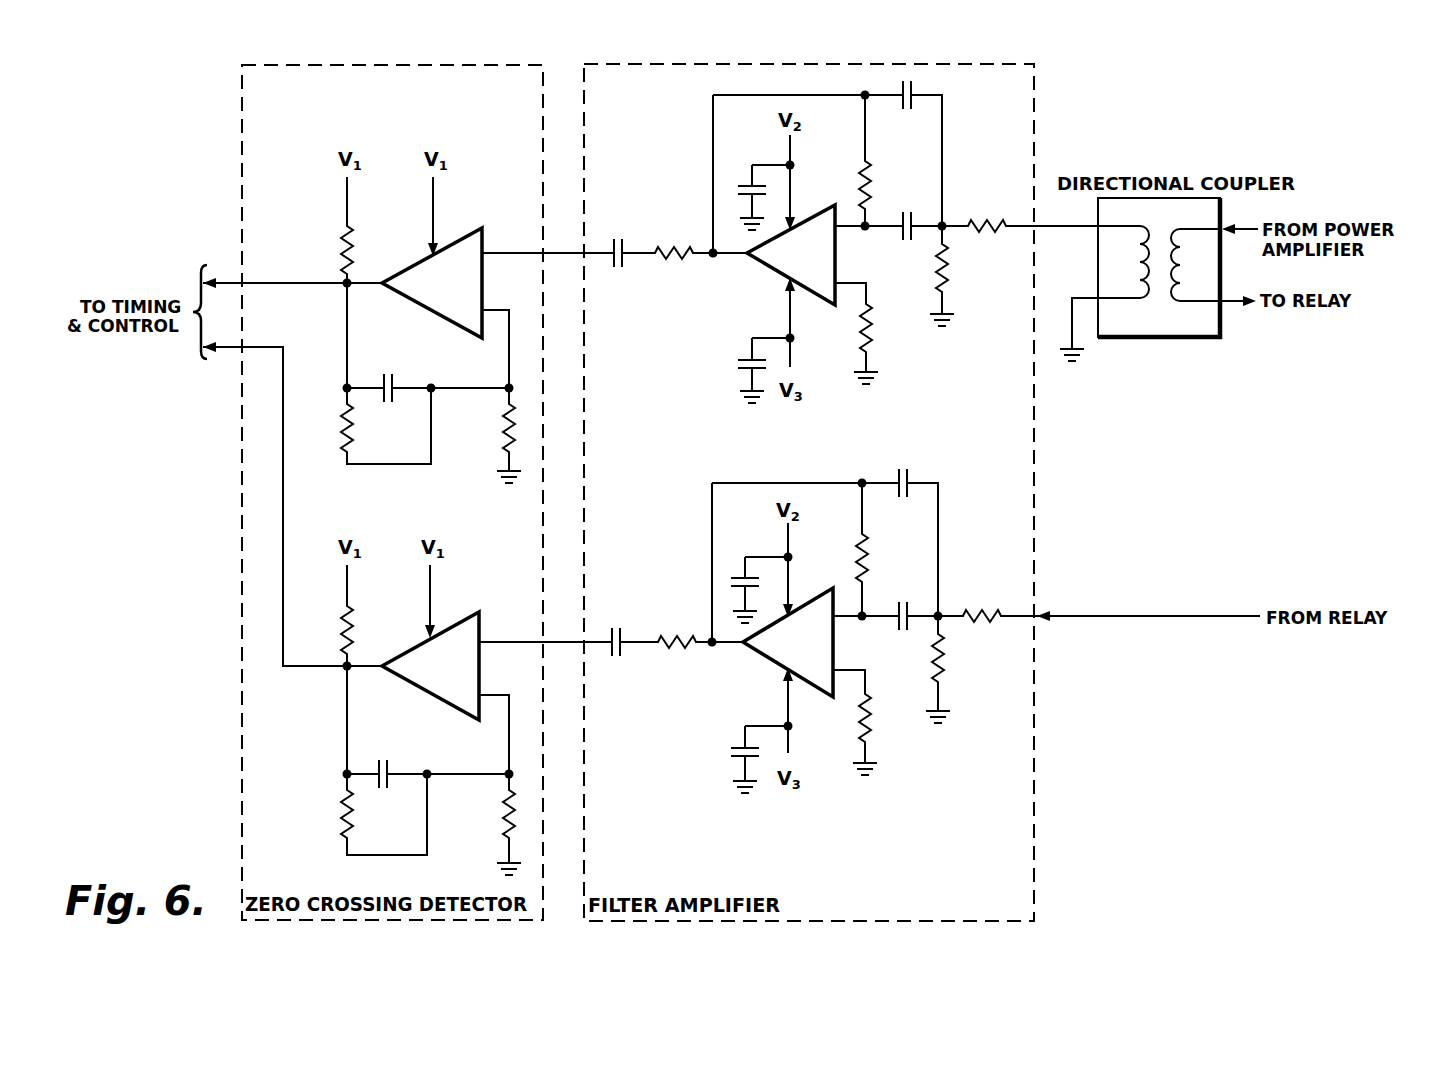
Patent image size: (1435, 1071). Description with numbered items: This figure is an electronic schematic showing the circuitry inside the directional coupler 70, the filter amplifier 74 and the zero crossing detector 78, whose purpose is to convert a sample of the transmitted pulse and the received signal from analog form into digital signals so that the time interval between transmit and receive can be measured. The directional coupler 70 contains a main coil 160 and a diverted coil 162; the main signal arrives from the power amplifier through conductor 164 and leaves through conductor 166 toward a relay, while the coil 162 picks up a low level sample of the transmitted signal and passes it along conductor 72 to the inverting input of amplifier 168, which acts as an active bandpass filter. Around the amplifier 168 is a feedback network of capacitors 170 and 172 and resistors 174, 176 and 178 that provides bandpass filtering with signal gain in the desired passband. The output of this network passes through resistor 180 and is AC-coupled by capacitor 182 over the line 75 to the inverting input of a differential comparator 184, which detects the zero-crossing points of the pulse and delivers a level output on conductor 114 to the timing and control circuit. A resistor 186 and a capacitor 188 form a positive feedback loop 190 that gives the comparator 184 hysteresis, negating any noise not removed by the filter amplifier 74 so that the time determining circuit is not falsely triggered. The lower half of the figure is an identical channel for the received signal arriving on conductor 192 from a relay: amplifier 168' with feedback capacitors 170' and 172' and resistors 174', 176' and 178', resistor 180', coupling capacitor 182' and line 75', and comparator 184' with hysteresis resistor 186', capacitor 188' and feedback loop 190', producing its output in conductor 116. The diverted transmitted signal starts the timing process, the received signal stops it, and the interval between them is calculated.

The directional coupler 70 is at (1138, 342).
The conductor 72 is at (1088, 226).
The filter amplifier 74 is at (1040, 127).
The filter amplifier output line 75 is at (543, 231).
The filter amplifier output line 75' is at (540, 615).
The zero crossing detector 78 is at (242, 173).
The conductor 114 is at (316, 283).
The conductor 116 is at (283, 505).
The main coil 160 is at (1176, 304).
The diverted coil 162 is at (1160, 235).
The conductor 164 is at (1248, 229).
The conductor 166 is at (1230, 307).
The amplifier 168 is at (772, 266).
The amplifier 168' is at (755, 653).
The capacitor 170 is at (910, 237).
The capacitor 170' is at (911, 602).
The capacitor 172 is at (948, 93).
The capacitor 172' is at (929, 469).
The resistor 174 is at (997, 201).
The resistor 174' is at (994, 590).
The resistor 176 is at (967, 276).
The resistor 176' is at (973, 669).
The resistor 178 is at (896, 160).
The resistor 178' is at (895, 549).
The resistor 180 is at (674, 279).
The resistor 180' is at (663, 668).
The capacitor 182 is at (636, 233).
The capacitor 182' is at (638, 618).
The differential comparator 184 is at (450, 262).
The differential comparator 184' is at (449, 646).
The resistor 186 is at (386, 426).
The resistor 186' is at (342, 814).
The capacitor 188 is at (409, 371).
The capacitor 188' is at (410, 756).
The positive feedback loop 190 is at (311, 334).
The positive feedback loop 190' is at (302, 720).
The conductor 192 is at (1191, 613).